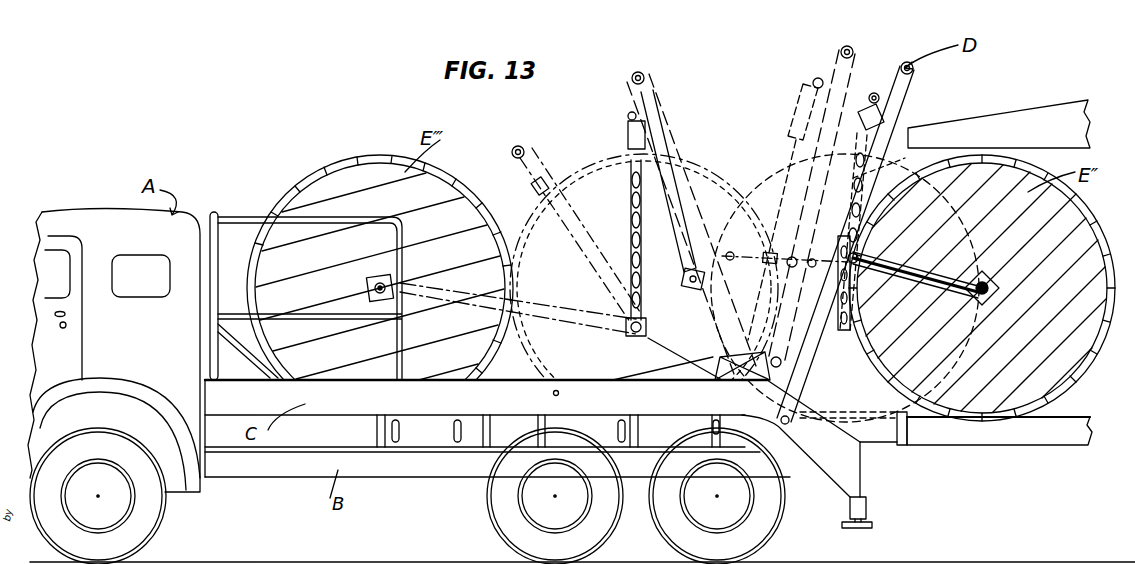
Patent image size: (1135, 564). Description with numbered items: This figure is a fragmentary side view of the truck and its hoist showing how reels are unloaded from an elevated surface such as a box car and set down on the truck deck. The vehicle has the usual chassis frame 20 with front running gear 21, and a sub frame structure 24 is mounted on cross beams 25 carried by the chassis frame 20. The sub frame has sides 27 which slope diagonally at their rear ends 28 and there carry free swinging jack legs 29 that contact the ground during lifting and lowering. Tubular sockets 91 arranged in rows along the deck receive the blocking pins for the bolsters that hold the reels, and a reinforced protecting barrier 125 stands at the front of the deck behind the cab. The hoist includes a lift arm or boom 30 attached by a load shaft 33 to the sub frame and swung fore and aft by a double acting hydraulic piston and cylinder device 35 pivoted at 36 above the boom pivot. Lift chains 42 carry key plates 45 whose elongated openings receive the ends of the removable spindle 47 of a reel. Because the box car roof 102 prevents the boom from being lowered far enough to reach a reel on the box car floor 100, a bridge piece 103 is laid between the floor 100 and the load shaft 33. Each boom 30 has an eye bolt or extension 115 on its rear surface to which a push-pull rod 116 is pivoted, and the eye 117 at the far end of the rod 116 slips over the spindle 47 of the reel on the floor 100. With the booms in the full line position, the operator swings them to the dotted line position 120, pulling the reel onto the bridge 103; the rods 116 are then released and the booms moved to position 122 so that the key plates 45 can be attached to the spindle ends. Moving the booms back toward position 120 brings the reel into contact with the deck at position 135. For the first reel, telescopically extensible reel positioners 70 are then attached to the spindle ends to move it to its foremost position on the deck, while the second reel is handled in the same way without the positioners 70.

The chassis frame 20 is at (448, 470).
The front running gear 21 is at (148, 526).
The frame structure 24 is at (627, 400).
The cross beams 25 is at (375, 432).
The sides 27 is at (440, 395).
The rear ends 28 is at (825, 455).
The jack legs 29 is at (847, 512).
The lift arm or boom 30 is at (540, 182).
The load shaft 33 is at (782, 420).
The double acting hydraulic piston and cylinder device 35 is at (670, 378).
The pivot 36 is at (778, 360).
The lift chains 42 is at (882, 176).
The key plates 45 is at (836, 298).
The spindle or shaft 47 is at (372, 290).
The reel positioners 70 is at (630, 198).
The tubular sockets 91 is at (400, 432).
The box car floor 100 is at (987, 440).
The box car roof 102 is at (1024, 96).
The bridge piece 103 is at (877, 428).
The eye bolt or extension 115 is at (870, 256).
The push-pull rod 116 is at (758, 256).
The eye 117 is at (850, 308).
The dotted line position of booms 120 is at (684, 142).
The boom arm position 122 is at (855, 58).
The front rack frame 125 is at (262, 200).
The position of reel contact with truck deck 135 is at (726, 182).